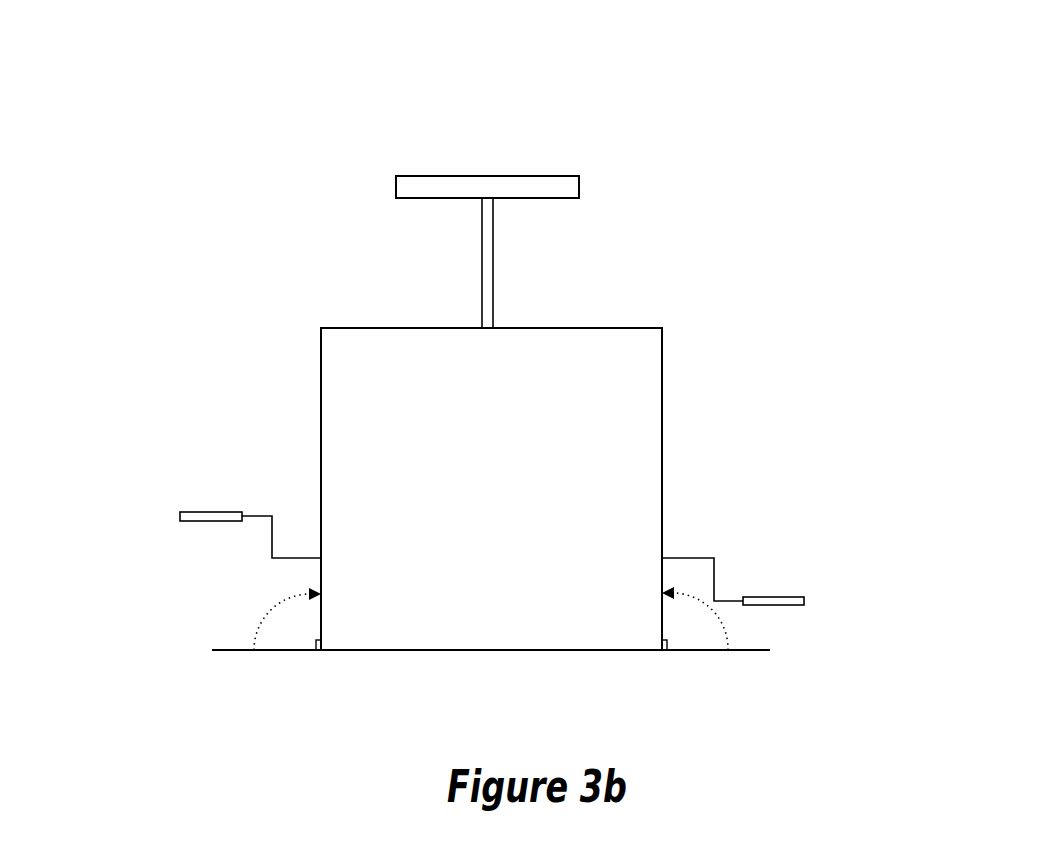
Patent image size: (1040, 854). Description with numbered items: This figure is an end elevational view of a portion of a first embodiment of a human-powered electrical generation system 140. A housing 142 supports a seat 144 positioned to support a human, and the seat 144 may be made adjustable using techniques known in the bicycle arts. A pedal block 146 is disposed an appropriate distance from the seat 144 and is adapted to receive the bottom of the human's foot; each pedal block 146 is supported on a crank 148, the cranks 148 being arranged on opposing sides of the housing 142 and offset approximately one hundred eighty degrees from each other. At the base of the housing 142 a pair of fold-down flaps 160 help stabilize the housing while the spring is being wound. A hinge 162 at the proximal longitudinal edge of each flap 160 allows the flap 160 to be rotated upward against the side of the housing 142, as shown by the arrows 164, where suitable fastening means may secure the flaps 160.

The human-powered electrical generation system 140 is at (950, 127).
The housing 142 is at (569, 462).
The seat 144 is at (460, 176).
The pedal block 146 is at (858, 516).
The crank 148 is at (755, 475).
The fold-down flap 160 is at (243, 651).
The hinge 162 is at (320, 652).
The arrow 164 is at (260, 622).